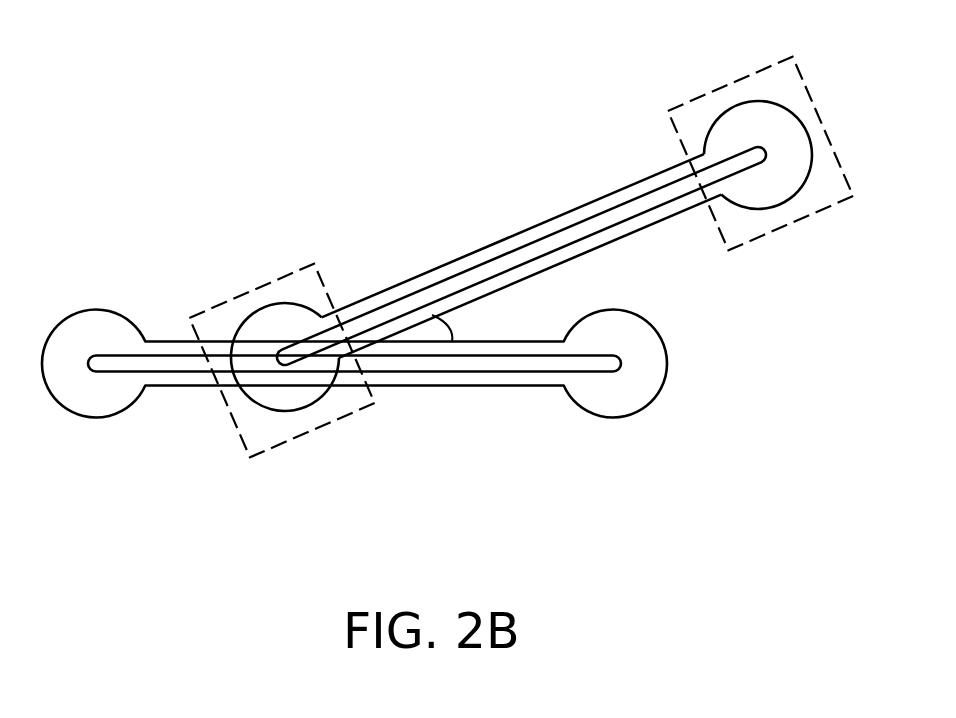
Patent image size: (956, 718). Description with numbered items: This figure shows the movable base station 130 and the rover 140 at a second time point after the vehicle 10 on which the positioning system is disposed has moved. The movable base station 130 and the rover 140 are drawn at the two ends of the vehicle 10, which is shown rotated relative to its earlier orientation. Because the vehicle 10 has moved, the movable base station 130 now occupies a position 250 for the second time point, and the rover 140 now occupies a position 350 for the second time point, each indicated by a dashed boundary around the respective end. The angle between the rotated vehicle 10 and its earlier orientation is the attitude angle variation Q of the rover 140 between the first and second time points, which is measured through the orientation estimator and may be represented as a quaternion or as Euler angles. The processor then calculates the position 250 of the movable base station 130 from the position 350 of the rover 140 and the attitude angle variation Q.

The vehicle 10 is at (507, 237).
The movable base station 130 is at (298, 413).
The rover 140 is at (787, 200).
The position of the movable base station at the second time point 250 is at (234, 296).
The position of the rover at the second time point 350 is at (735, 82).
The attitude angle variation Q is at (456, 328).